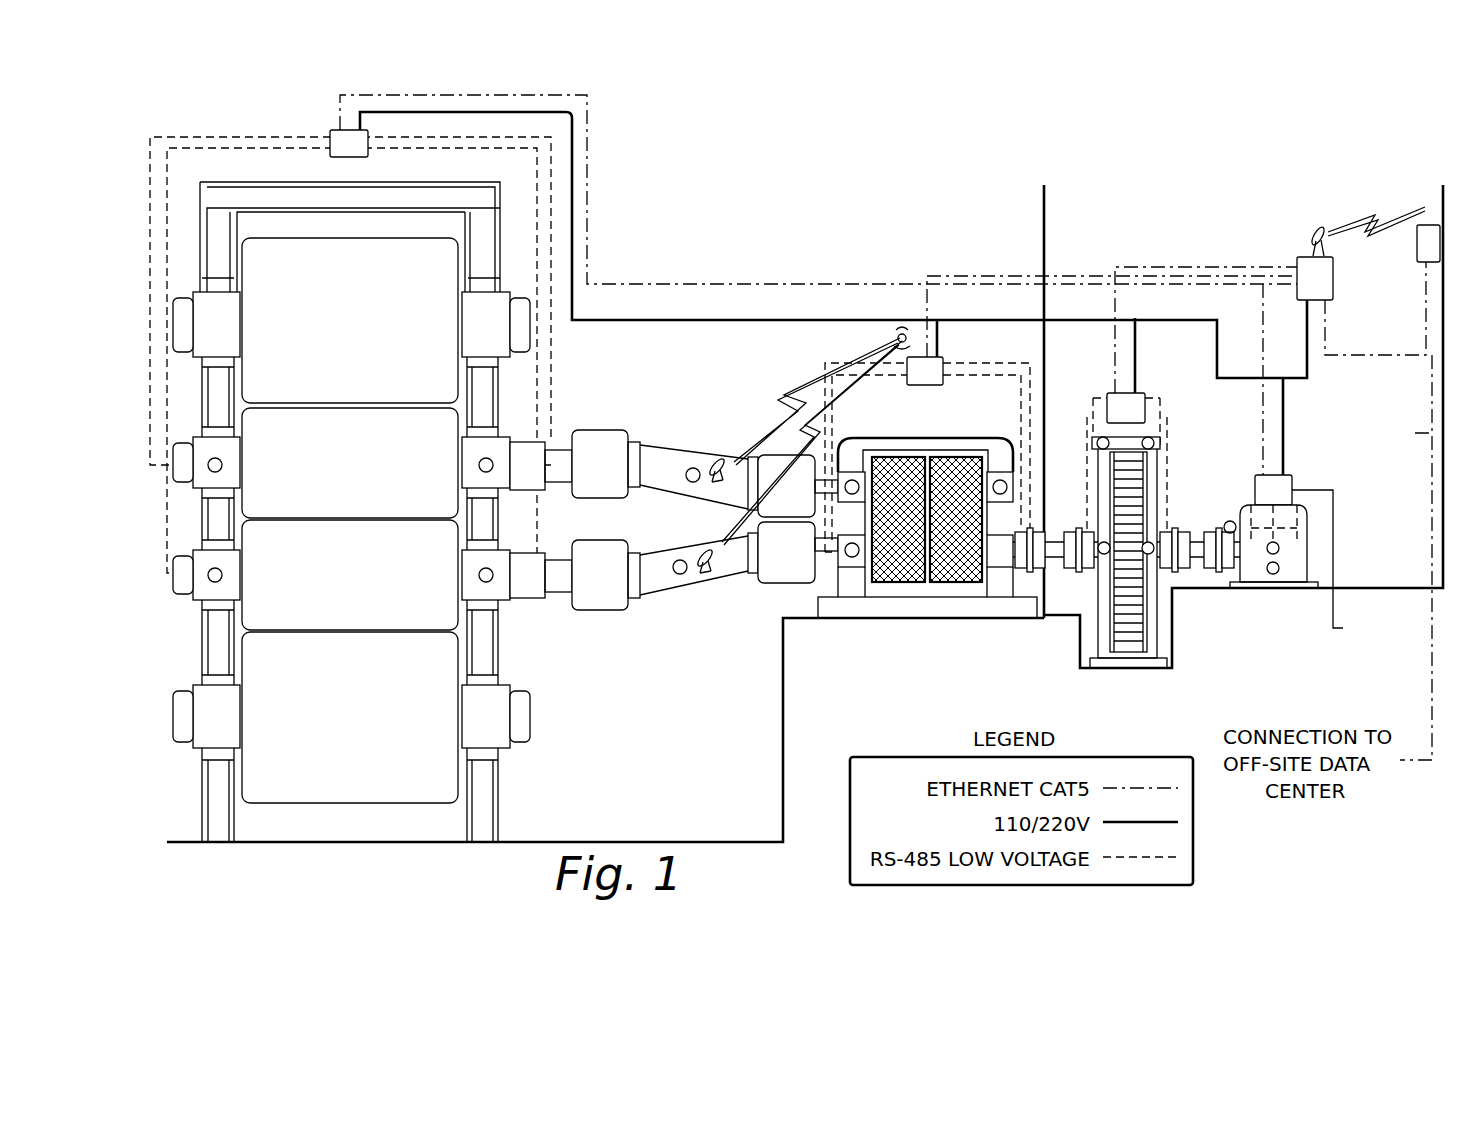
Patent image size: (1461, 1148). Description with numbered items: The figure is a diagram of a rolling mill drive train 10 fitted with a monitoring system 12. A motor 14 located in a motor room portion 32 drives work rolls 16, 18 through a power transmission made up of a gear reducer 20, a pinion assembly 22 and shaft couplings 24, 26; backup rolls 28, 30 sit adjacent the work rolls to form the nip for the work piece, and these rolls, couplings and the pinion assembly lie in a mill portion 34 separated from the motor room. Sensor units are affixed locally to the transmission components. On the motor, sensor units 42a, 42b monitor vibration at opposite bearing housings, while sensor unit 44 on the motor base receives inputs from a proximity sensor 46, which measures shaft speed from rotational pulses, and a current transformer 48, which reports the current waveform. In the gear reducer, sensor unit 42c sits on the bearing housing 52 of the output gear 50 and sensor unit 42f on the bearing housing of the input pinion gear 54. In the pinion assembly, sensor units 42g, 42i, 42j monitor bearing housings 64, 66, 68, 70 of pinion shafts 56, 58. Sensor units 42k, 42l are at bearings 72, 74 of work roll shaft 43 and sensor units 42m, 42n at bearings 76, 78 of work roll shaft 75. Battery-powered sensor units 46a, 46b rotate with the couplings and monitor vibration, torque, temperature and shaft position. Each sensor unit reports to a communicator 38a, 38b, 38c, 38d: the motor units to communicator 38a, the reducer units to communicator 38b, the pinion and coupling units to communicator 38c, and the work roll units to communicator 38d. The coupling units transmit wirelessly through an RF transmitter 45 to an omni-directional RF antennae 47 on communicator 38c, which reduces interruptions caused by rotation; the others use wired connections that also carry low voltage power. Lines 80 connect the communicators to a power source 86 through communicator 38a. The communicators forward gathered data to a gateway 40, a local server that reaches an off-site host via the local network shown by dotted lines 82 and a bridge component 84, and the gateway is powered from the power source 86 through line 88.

The rolling mill drive train 10 is at (942, 243).
The monitoring system 12 is at (987, 262).
The motor 14 is at (1305, 528).
The work roll 16 is at (358, 477).
The work roll 18 is at (358, 587).
The gear reducer 20 is at (1150, 668).
The pinion assembly 22 is at (888, 607).
The shaft coupling 24 is at (598, 440).
The shaft coupling 26 is at (602, 600).
The backup roll 28 is at (358, 334).
The backup roll 30 is at (358, 722).
The motor room portion 32 is at (1172, 228).
The mill portion 34 is at (840, 224).
The communicator 38a is at (1293, 480).
The communicator 38b is at (1143, 400).
The communicator 38c is at (944, 358).
The communicator 38d is at (342, 130).
The gateway 40 is at (1418, 245).
The sensor unit 42a is at (1093, 442).
The sensor unit 42b is at (1305, 548).
The sensor unit 42c is at (1104, 556).
The sensor unit 42f is at (1152, 450).
The sensor unit 42g is at (860, 567).
The sensor unit 42i is at (850, 480).
The sensor unit 42j is at (1000, 480).
The sensor unit 42k is at (222, 465).
The sensor unit 42l is at (479, 465).
The sensor unit 42m is at (222, 575).
The sensor unit 42n is at (479, 577).
The work roll shaft 43 is at (512, 442).
The sensor unit 44 is at (1271, 556).
The RF transmitter 45 is at (712, 478).
The proximity sensor 46 is at (1232, 521).
The sensor unit 46a is at (693, 468).
The sensor unit 46b is at (680, 575).
The omni-directional RF antennae 47 is at (903, 333).
The current transformer 48 is at (1275, 575).
The output gear 50 is at (1127, 643).
The bearing housing 52 is at (1101, 512).
The input pinion gear 54 is at (1168, 450).
The pinion shaft 56 is at (927, 585).
The pinion shaft 58 is at (928, 468).
The bearing housing 64 is at (850, 567).
The bearing housing 66 is at (1010, 565).
The bearing housing 68 is at (835, 482).
The bearing housing 70 is at (1004, 506).
The bearing 72 is at (207, 524).
The bearing 74 is at (492, 523).
The work roll shaft 75 is at (502, 590).
The bearing 76 is at (212, 640).
The bearing 78 is at (487, 638).
The lines 80 is at (720, 318).
The dotted lines 82 is at (1077, 284).
The bridge component 84 is at (1334, 283).
The power source 86 is at (1360, 432).
The line 88 is at (1432, 410).